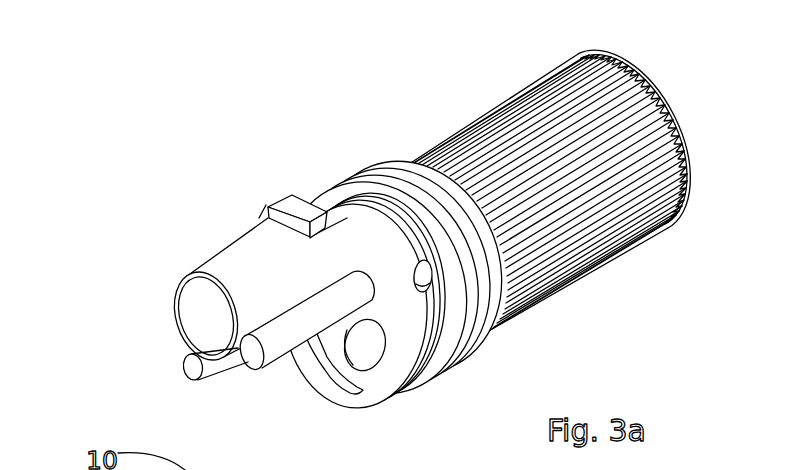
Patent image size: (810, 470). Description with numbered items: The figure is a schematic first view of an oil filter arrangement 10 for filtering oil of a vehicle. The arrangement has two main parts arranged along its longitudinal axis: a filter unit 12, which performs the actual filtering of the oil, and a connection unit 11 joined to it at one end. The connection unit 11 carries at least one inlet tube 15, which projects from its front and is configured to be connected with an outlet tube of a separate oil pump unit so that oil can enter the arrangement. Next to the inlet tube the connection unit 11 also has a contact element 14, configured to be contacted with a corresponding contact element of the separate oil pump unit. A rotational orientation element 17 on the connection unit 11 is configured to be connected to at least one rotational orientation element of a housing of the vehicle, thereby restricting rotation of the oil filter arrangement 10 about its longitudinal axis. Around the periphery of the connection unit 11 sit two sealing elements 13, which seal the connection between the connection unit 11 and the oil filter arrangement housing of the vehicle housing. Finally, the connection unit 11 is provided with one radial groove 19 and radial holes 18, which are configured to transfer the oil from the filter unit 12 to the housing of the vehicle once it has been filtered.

The oil filter arrangement 10 is at (200, 127).
The connection unit 11 is at (303, 197).
The filter unit 12 is at (495, 125).
The sealing elements 13 is at (385, 168).
The contact element 14 is at (307, 313).
The inlet tube 15 is at (245, 260).
The rotational orientation element 17 is at (424, 298).
The radial holes 18 is at (422, 280).
The radial groove 19 is at (432, 332).